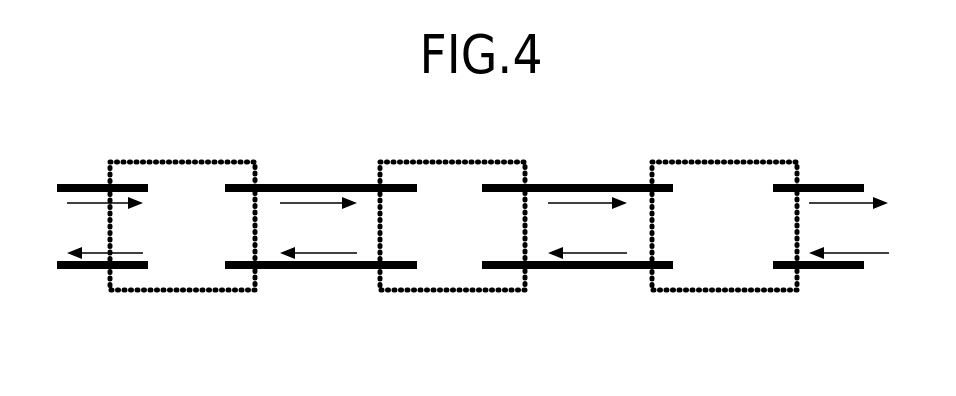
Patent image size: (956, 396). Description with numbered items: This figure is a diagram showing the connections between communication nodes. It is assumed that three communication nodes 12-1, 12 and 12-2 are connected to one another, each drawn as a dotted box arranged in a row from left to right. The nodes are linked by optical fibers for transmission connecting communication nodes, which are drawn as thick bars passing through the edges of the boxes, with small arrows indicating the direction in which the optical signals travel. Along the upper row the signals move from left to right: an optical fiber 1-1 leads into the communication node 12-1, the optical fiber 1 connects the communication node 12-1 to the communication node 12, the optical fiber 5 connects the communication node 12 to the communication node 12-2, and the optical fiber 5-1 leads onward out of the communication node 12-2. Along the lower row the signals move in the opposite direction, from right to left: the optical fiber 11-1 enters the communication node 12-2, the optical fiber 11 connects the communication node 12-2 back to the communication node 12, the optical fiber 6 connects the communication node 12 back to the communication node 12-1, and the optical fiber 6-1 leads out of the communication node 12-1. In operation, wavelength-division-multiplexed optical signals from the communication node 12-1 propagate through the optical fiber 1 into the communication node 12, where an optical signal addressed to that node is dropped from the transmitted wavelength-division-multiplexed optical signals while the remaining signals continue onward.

The optical fiber 1-1 is at (85, 185).
The optical fiber 1 is at (318, 185).
The optical fiber 5 is at (592, 185).
The optical fiber 5-1 is at (830, 185).
The optical fiber 6-1 is at (85, 270).
The optical fiber 6 is at (316, 270).
The optical fiber 11 is at (590, 270).
The optical fiber 11-1 is at (830, 270).
The communication node 12-1 is at (185, 293).
The communication node 12 is at (457, 293).
The communication node 12-2 is at (727, 293).